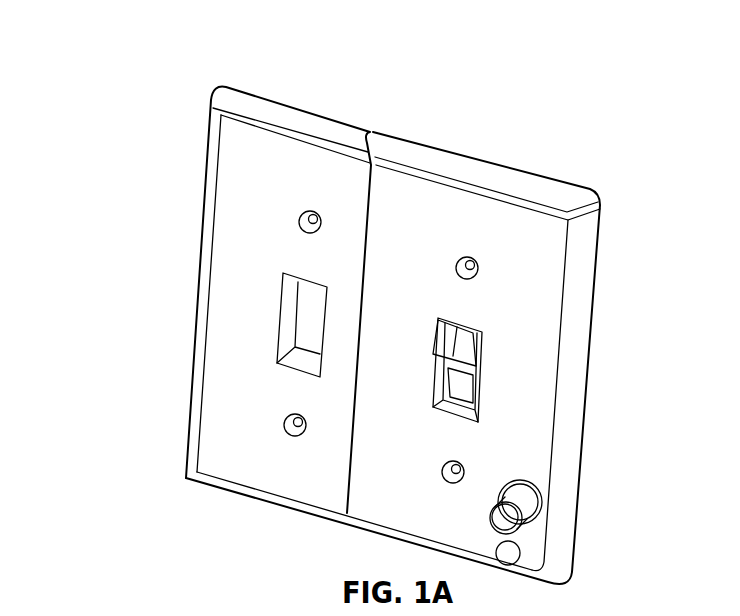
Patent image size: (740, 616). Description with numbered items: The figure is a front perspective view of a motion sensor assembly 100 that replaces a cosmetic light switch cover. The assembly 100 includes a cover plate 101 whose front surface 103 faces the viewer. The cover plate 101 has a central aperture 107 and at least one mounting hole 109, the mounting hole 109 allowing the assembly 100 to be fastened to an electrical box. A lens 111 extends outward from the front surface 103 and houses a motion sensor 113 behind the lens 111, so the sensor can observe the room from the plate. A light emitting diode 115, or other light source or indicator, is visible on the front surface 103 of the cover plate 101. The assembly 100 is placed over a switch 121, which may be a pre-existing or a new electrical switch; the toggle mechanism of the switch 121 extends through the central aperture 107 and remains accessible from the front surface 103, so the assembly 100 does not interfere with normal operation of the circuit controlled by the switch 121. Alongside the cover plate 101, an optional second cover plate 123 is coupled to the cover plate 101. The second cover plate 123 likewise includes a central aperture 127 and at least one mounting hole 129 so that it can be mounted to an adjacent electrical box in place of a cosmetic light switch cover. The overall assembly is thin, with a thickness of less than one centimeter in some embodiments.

The motion sensor assembly 100 is at (147, 38).
The cover plate 101 is at (481, 150).
The front surface 103 is at (512, 218).
The central aperture 107 is at (483, 365).
The mounting hole 109 is at (473, 260).
The lens 111 is at (520, 522).
The motion sensor 113 is at (543, 502).
The light emitting diode 115 is at (520, 562).
The switch 121 is at (465, 383).
The second cover plate 123 is at (280, 478).
The central aperture 127 is at (313, 333).
The mounting hole 129 is at (301, 216).